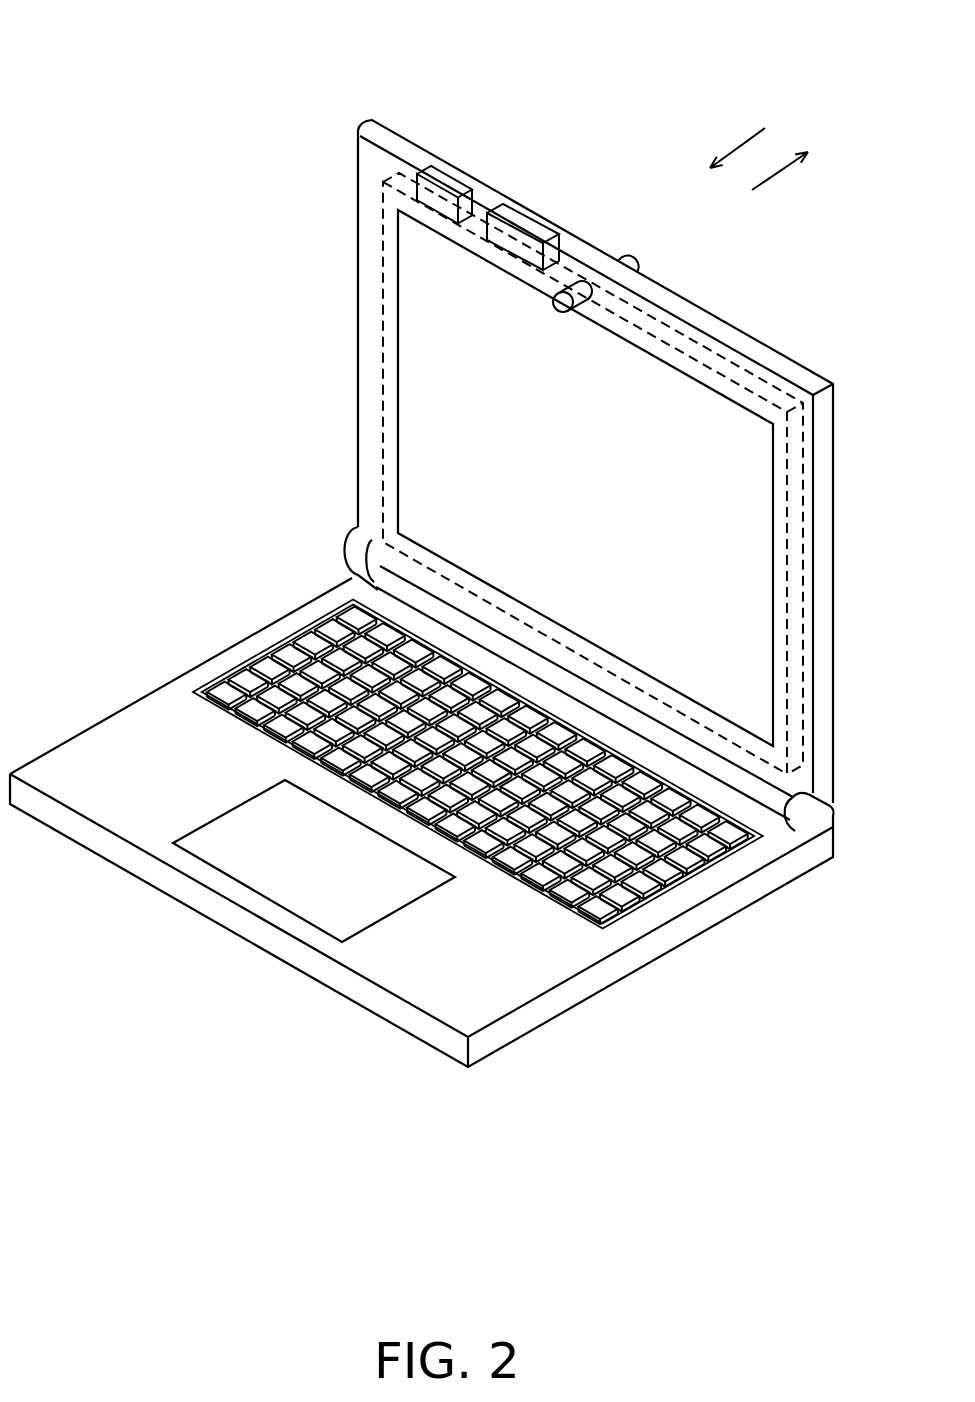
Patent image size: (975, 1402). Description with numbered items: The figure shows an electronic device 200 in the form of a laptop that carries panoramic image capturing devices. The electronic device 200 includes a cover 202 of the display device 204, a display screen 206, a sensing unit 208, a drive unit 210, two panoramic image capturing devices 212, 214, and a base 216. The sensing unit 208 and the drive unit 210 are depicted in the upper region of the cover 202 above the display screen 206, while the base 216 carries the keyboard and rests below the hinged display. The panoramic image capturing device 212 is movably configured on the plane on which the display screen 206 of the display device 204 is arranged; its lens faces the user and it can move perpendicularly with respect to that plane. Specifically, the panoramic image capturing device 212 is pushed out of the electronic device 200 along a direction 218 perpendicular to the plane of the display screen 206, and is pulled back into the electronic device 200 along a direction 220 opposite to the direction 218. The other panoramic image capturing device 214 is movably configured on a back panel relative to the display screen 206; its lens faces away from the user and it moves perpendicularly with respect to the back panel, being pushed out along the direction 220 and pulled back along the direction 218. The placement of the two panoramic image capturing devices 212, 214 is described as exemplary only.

The electronic device 200 is at (62, 34).
The cover 202 is at (362, 124).
The display device 204 is at (383, 326).
The display screen 206 is at (396, 390).
The sensing unit 208 is at (447, 168).
The drive unit 210 is at (533, 210).
The panoramic image capturing device 212 is at (575, 290).
The panoramic image capturing device 214 is at (637, 256).
The base 216 is at (103, 742).
The direction 218 is at (724, 141).
The direction 220 is at (793, 177).